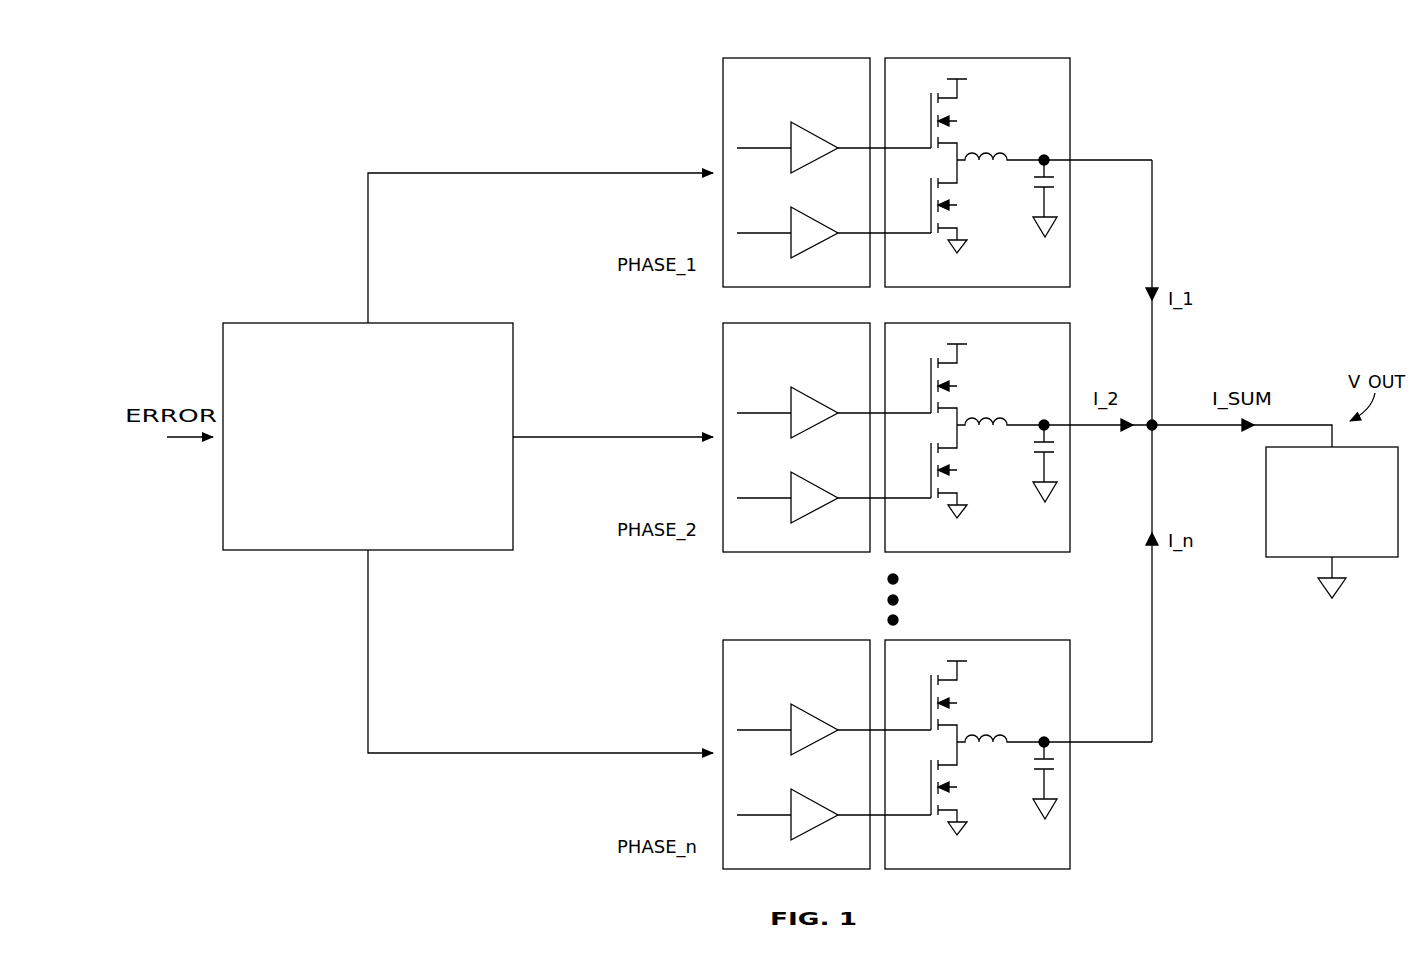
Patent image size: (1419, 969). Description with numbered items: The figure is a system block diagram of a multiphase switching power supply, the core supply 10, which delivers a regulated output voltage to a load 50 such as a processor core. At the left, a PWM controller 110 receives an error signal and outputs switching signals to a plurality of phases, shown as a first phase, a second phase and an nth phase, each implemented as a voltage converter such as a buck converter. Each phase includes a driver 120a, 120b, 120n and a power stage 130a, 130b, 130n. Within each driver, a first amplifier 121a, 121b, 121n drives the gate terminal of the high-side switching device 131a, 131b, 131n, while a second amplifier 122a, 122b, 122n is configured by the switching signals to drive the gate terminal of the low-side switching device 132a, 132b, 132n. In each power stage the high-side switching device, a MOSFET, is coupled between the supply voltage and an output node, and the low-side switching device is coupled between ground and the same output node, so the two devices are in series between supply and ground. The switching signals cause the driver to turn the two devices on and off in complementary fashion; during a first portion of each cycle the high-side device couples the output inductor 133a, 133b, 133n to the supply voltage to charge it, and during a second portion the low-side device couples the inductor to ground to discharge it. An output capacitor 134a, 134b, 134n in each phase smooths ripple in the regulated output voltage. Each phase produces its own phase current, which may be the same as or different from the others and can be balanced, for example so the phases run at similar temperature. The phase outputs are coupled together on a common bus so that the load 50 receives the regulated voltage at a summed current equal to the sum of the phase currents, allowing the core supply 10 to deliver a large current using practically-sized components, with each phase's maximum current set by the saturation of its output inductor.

The core supply 10 is at (269, 99).
The PWM controller 110 is at (343, 493).
The load 50 is at (1317, 538).
The driver 120a is at (822, 40).
The driver 120b is at (796, 417).
The driver 120n is at (796, 734).
The first amplifier 121a is at (828, 111).
The first amplifier 121b is at (834, 395).
The first amplifier 121n is at (834, 712).
The second amplifier 122a is at (828, 197).
The second amplifier 122b is at (834, 481).
The second amplifier 122n is at (834, 798).
The power stage 130a is at (1000, 56).
The power stage 130b is at (977, 417).
The power stage 130n is at (977, 734).
The high-side switching device 131a is at (979, 121).
The high-side switching device 131b is at (977, 384).
The high-side switching device 131n is at (977, 701).
The low-side switching device 132a is at (972, 218).
The low-side switching device 132b is at (973, 471).
The low-side switching device 132n is at (973, 788).
The output inductor 133a is at (991, 146).
The output inductor 133b is at (1054, 404).
The output inductor 133n is at (1054, 721).
The output capacitor 134a is at (1059, 190).
The output capacitor 134b is at (1082, 463).
The output capacitor 134n is at (1082, 780).